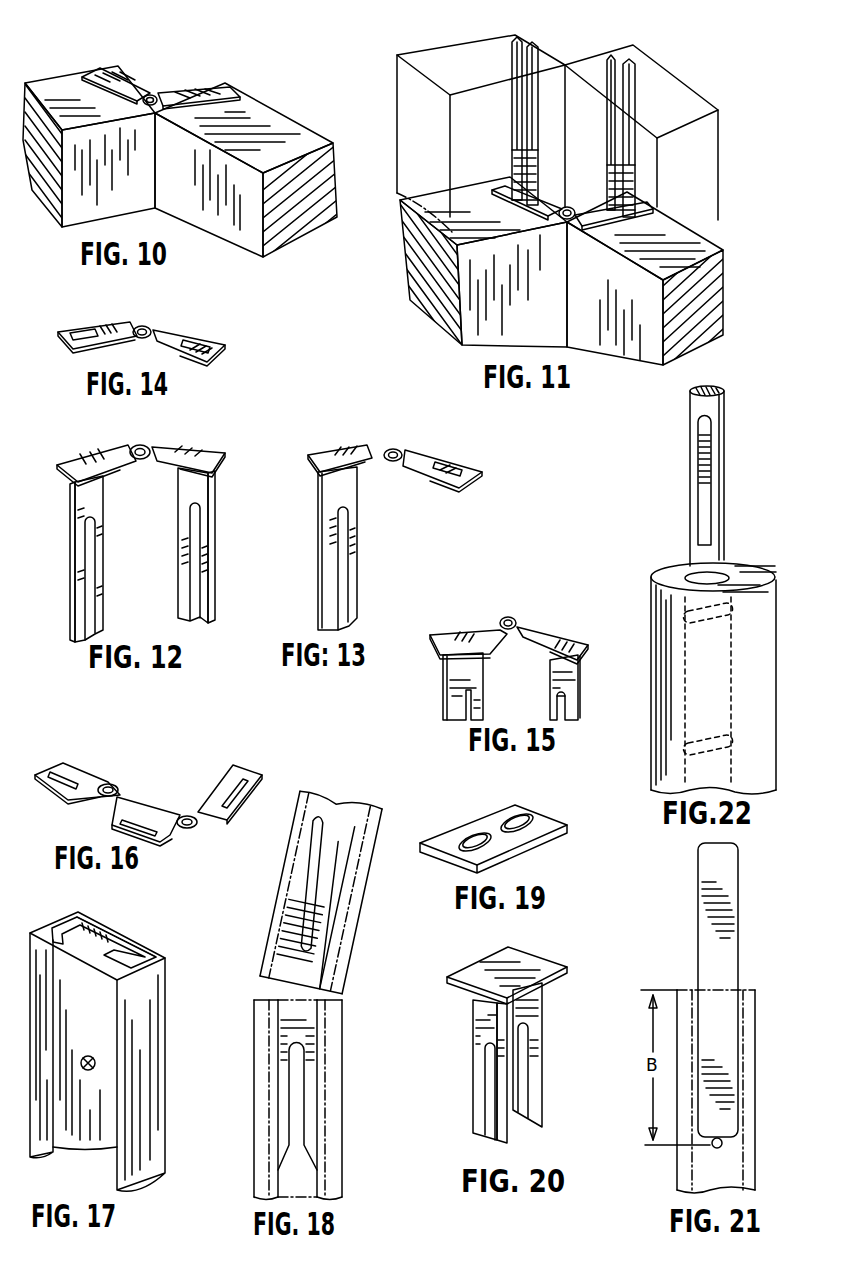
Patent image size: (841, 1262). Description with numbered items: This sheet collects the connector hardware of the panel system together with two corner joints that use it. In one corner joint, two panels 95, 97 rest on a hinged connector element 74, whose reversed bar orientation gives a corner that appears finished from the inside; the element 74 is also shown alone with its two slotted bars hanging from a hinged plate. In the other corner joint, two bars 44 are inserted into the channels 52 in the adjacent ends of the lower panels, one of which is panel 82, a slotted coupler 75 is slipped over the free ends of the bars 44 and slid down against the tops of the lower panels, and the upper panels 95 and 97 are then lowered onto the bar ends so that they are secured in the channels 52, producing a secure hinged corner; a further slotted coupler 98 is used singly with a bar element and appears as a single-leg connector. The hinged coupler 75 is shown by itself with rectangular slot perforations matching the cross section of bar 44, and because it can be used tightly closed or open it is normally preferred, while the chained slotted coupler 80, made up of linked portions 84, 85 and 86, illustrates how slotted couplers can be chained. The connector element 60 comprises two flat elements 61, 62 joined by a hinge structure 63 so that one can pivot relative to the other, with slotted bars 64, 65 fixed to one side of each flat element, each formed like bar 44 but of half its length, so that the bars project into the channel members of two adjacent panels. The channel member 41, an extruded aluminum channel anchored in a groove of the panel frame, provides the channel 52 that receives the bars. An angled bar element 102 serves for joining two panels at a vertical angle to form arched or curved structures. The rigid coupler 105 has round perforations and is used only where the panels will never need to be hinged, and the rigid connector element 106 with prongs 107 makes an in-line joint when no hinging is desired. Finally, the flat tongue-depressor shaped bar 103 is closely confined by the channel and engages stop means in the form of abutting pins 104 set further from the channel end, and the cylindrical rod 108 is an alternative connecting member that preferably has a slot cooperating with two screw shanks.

In FIG. 10, the panel 95 is at (58, 84).
In FIG. 11, the panel 95 is at (457, 44).
In FIG. 10, the panel 97 is at (278, 120).
In FIG. 11, the panel 97 is at (668, 73).
In FIG. 10, the hinged element 74 is at (161, 92).
In FIG. 12, the hinged element 74 is at (212, 449).
In FIG. 11, the hinged coupler 75 is at (586, 200).
In FIG. 14, the hinged coupler 75 is at (198, 327).
In FIG. 11, the bar 44 is at (524, 140).
In FIG. 11, the panel 82 is at (477, 343).
In FIG. 11, the slotted coupler 98 is at (612, 350).
In FIG. 13, the slotted coupler 98 is at (473, 461).
In FIG. 15, the connector element 60 is at (501, 644).
In FIG. 15, the flat element 61 is at (441, 634).
In FIG. 15, the flat element 62 is at (570, 630).
In FIG. 15, the hinge structure 63 is at (513, 618).
In FIG. 15, the slotted bar 64 is at (445, 690).
In FIG. 15, the slotted bar 65 is at (553, 683).
In FIG. 22, the connecting member 108 is at (690, 461).
In FIG. 16, the slotted coupler 80 is at (148, 784).
In FIG. 16, the first link arm 84 is at (73, 773).
In FIG. 16, the middle link 85 is at (140, 815).
In FIG. 16, the second link arm 86 is at (222, 775).
In FIG. 17, the channel 52 is at (127, 952).
In FIG. 17, the channel member 41 is at (158, 1045).
In FIG. 18, the angled bar element 102 is at (310, 1015).
In FIG. 19, the rigid coupler 105 is at (467, 822).
In FIG. 20, the rigid connector element 106 is at (490, 1036).
In FIG. 20, the prongs 107 is at (478, 1058).
In FIG. 21, the flat bar 103 is at (698, 902).
In FIG. 21, the abutting pins 104 is at (710, 1146).